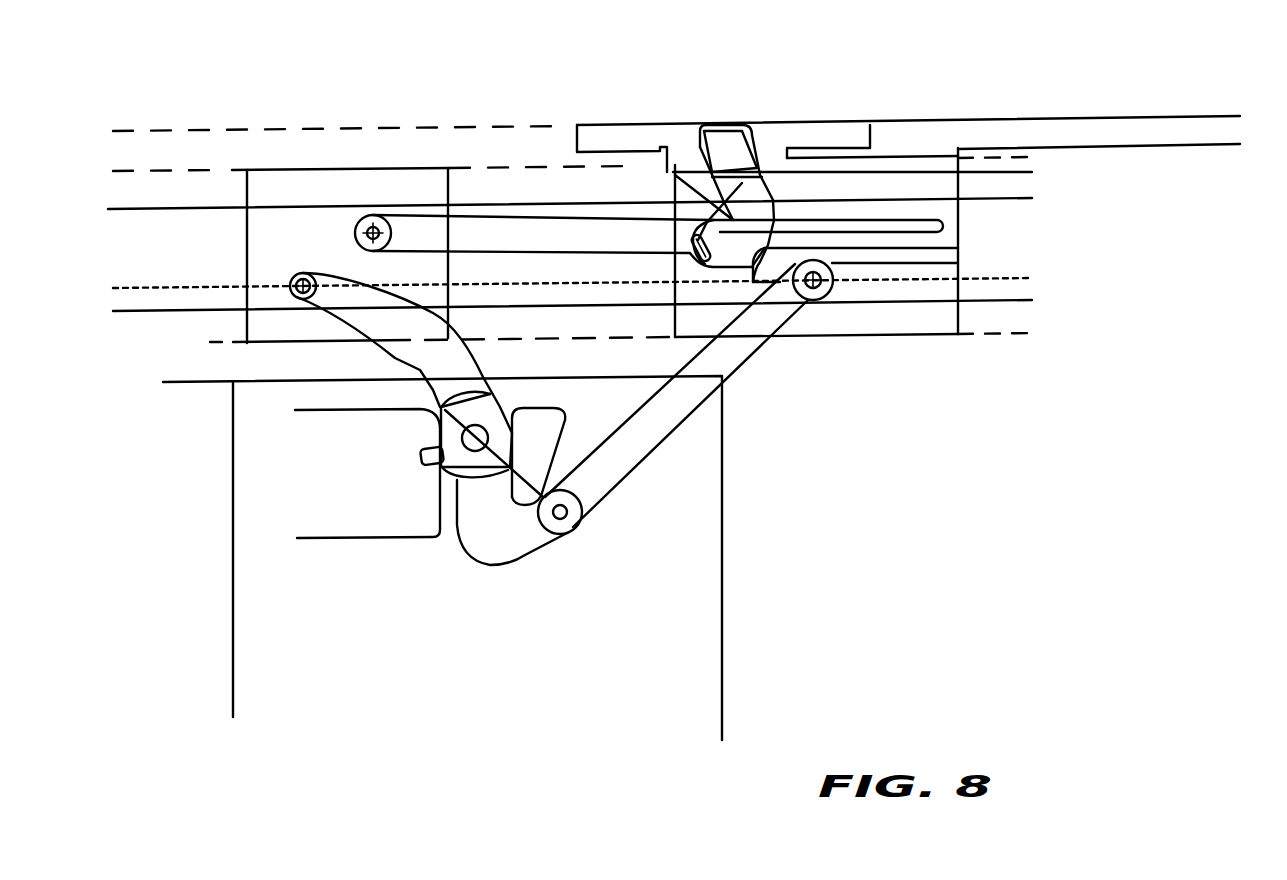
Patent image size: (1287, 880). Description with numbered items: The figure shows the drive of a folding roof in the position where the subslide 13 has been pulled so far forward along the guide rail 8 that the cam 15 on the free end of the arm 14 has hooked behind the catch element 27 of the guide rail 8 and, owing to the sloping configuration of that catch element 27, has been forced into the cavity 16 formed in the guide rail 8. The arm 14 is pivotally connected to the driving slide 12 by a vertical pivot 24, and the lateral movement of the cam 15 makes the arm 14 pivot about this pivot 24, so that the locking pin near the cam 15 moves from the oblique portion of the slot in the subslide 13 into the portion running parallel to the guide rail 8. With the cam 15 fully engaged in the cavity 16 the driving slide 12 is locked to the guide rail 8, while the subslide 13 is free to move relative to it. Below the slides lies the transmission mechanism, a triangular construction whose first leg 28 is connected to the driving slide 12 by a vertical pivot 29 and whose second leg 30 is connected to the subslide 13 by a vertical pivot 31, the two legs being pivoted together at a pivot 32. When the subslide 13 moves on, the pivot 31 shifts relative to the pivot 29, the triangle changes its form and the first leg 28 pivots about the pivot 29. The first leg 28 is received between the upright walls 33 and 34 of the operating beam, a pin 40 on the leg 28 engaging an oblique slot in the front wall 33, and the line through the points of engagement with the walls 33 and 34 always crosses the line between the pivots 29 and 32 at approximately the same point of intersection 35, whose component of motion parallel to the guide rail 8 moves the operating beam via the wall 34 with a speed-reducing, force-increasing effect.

The guide rail 8 is at (218, 185).
The driving slide 12 is at (273, 222).
The subslide 13 is at (887, 325).
The arm 14 is at (508, 232).
The cam 15 is at (729, 153).
The cavity 16 is at (743, 137).
The vertical pivot 24 is at (375, 228).
The catch element 27 is at (700, 236).
The first leg 28 is at (341, 292).
The vertical pivot 29 is at (304, 274).
The second leg 30 is at (647, 447).
The vertical pivot 31 is at (813, 292).
The pivot 32 is at (560, 519).
The front upright wall 33 is at (433, 520).
The upright wall 34 is at (521, 487).
The point of intersection 35 is at (472, 445).
The pin 40 is at (433, 467).